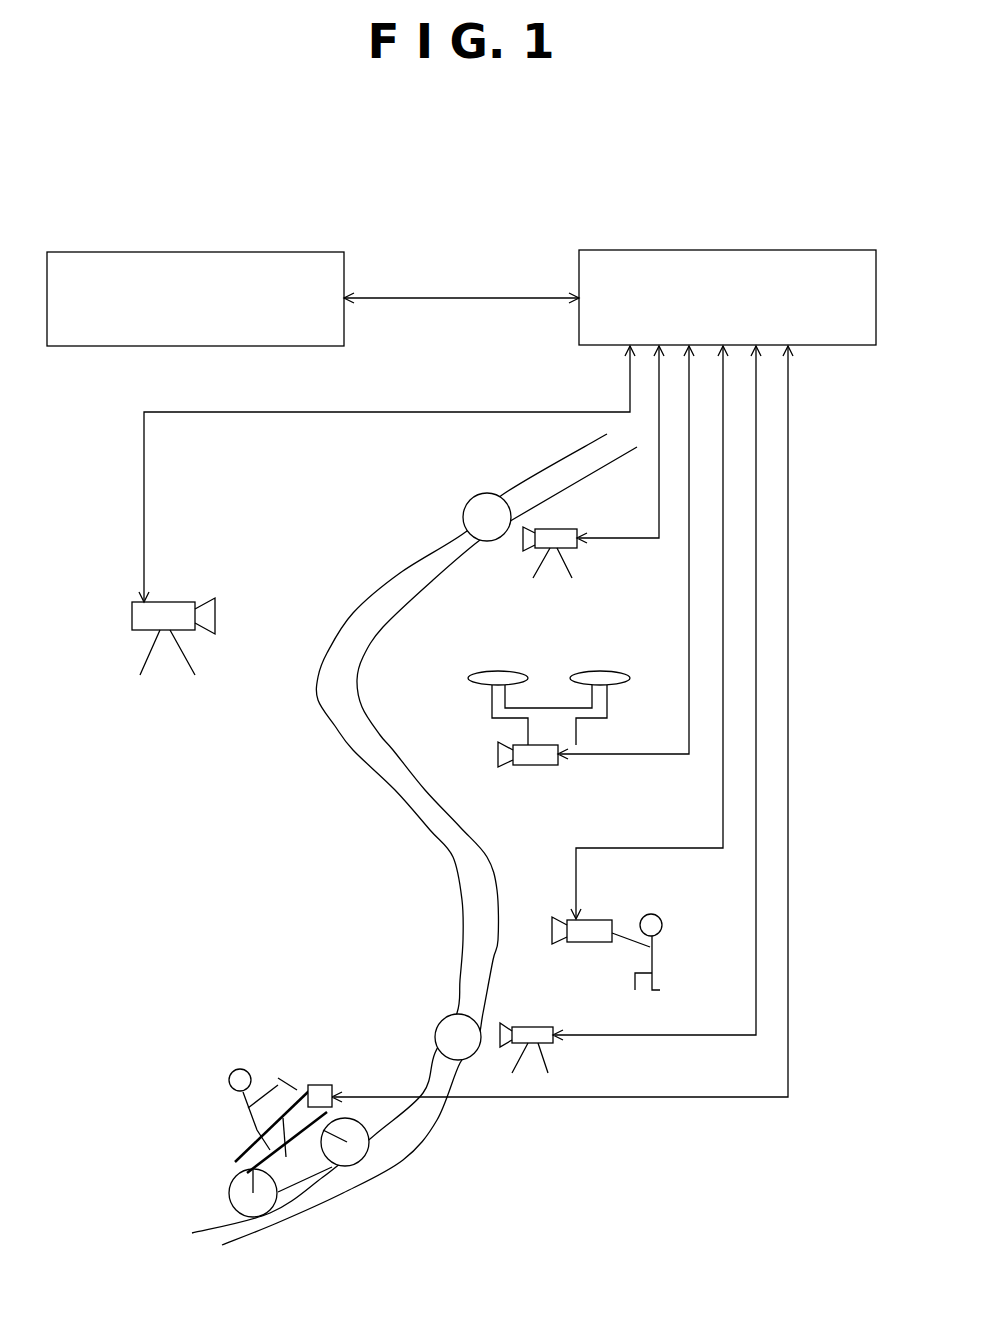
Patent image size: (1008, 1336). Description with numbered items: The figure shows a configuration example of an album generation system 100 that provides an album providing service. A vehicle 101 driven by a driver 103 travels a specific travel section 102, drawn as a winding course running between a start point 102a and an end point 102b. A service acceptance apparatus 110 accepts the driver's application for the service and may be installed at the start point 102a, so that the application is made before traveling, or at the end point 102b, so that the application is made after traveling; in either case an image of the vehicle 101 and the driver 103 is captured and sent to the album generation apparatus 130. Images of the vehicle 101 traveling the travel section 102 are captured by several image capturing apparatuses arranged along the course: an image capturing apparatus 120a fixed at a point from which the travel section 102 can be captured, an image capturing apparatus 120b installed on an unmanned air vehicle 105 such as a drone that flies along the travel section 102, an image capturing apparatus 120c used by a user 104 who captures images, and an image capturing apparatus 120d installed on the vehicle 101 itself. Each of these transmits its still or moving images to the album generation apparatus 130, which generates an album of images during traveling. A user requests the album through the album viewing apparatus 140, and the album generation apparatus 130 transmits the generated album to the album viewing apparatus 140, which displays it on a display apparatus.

The album generation system 100 is at (140, 156).
The vehicle 101 is at (238, 1193).
The travel section 102 is at (365, 745).
The start point 102a is at (436, 1030).
The end point 102b is at (464, 507).
The driver 103 is at (230, 1078).
The user 104 is at (663, 920).
The unmanned air vehicle 105 is at (570, 735).
The service acceptance apparatus 110 is at (558, 529).
The image capturing apparatus 120a is at (170, 602).
The image capturing apparatus 120b is at (548, 766).
The image capturing apparatus 120c is at (586, 920).
The image capturing apparatus 120d is at (320, 1085).
The album generation apparatus 130 is at (806, 250).
The album viewing apparatus 140 is at (283, 252).